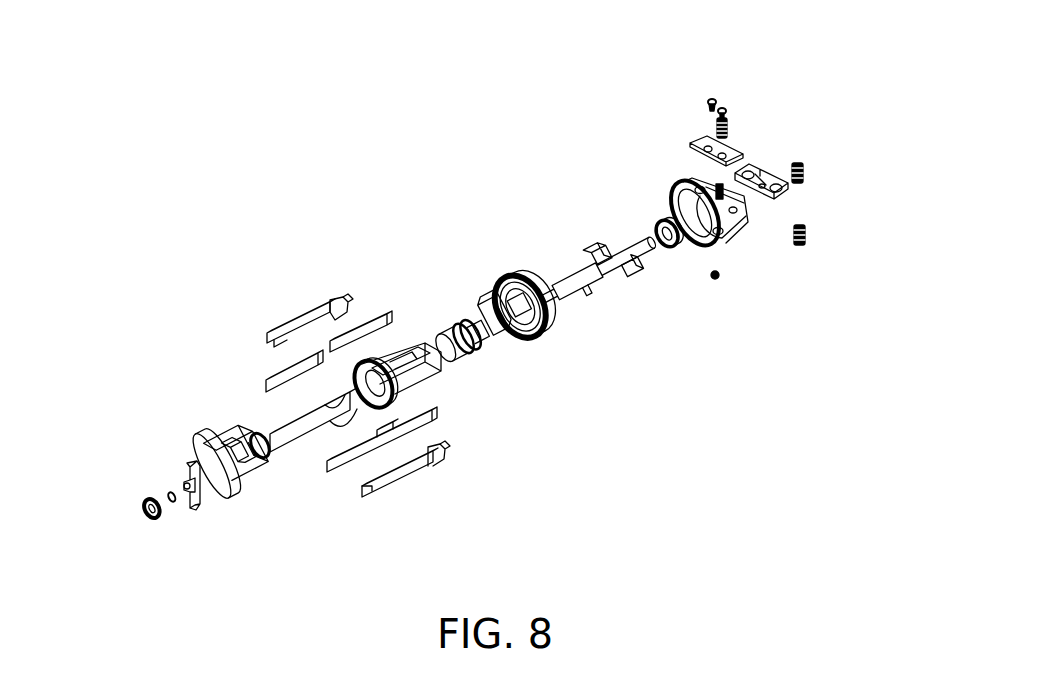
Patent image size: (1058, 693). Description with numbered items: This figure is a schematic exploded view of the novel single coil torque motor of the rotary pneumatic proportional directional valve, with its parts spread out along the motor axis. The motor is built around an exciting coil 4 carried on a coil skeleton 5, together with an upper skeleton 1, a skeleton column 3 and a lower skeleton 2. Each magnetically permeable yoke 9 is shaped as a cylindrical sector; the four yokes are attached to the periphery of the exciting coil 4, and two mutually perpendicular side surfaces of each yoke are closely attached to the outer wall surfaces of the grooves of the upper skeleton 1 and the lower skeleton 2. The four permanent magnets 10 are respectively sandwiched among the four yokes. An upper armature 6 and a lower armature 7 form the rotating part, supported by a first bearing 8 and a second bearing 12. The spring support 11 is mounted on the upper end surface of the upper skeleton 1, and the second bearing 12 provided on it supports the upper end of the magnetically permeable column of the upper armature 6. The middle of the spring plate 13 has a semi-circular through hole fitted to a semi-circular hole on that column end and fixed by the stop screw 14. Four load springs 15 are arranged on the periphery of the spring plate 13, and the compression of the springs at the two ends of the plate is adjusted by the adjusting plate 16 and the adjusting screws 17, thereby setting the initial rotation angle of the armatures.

The upper skeleton 1 is at (545, 335).
The lower skeleton 2 is at (235, 452).
The skeleton column 3 is at (462, 345).
The exciting coil 4 is at (345, 387).
The coil skeleton 5 is at (385, 402).
The upper armature 6 is at (607, 268).
The lower armature 7 is at (187, 470).
The first bearing 8 is at (142, 505).
The magnetically permeable yoke 9 is at (397, 478).
The permanent magnet 10 is at (383, 312).
The spring support 11 is at (678, 187).
The second bearing 12 is at (657, 228).
The spring plate 13 is at (773, 177).
The stop screw 14 is at (722, 278).
The load spring 15 is at (807, 235).
The adjusting plate 16 is at (700, 137).
The adjusting screw 17 is at (725, 107).